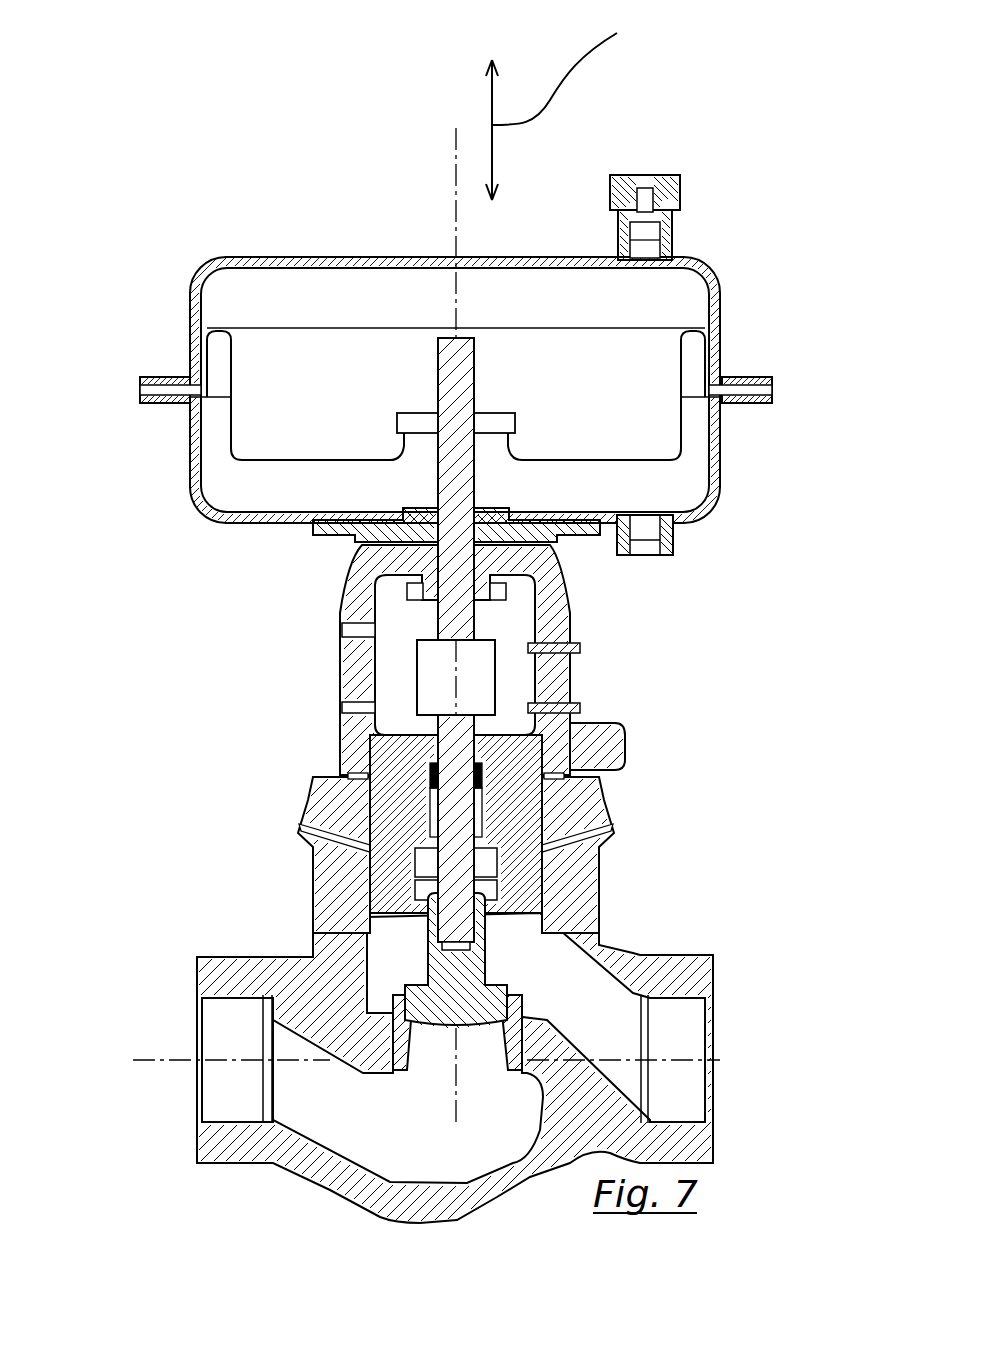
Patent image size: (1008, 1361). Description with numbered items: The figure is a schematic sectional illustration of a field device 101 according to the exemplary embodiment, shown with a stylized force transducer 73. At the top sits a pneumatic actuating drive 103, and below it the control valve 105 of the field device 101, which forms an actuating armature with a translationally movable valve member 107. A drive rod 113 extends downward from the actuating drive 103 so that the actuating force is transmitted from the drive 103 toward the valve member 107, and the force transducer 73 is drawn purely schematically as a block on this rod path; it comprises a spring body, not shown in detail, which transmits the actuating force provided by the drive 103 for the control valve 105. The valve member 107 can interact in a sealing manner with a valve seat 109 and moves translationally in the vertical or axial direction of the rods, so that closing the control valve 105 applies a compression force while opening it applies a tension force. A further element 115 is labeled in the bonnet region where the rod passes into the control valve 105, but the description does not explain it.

The field device 101 is at (233, 188).
The pneumatic actuating drive 103 is at (371, 256).
The force transducer 73 is at (433, 668).
The control valve 105 is at (277, 903).
The valve member 107 is at (423, 979).
The valve seat 109 is at (490, 1030).
The drive rod 113 is at (482, 620).
The stem packing 115 is at (484, 869).